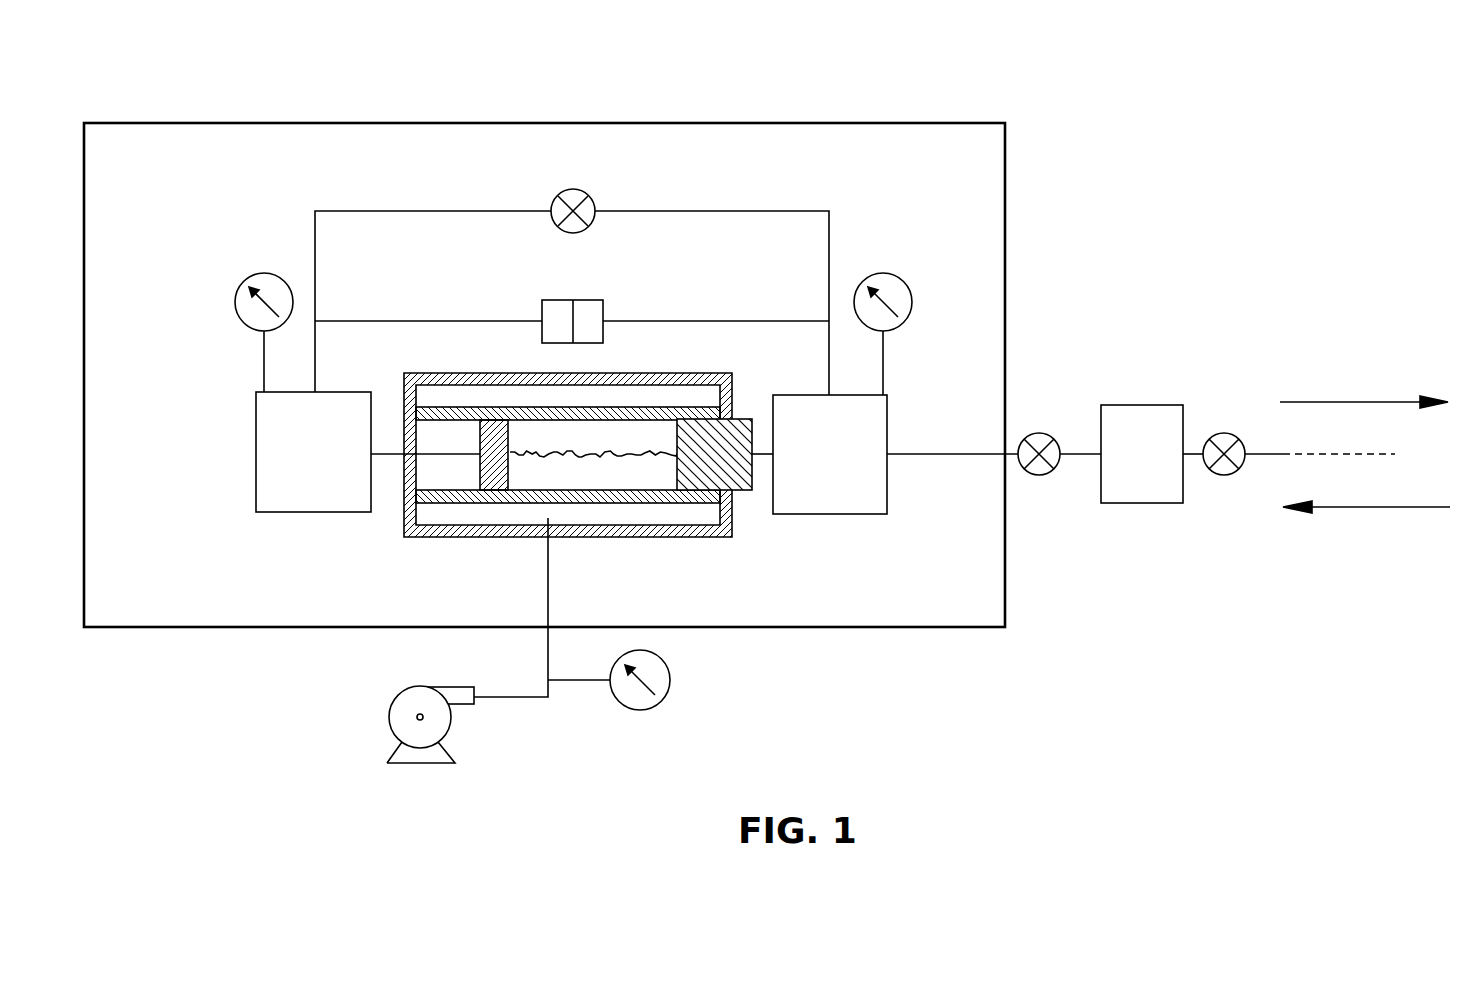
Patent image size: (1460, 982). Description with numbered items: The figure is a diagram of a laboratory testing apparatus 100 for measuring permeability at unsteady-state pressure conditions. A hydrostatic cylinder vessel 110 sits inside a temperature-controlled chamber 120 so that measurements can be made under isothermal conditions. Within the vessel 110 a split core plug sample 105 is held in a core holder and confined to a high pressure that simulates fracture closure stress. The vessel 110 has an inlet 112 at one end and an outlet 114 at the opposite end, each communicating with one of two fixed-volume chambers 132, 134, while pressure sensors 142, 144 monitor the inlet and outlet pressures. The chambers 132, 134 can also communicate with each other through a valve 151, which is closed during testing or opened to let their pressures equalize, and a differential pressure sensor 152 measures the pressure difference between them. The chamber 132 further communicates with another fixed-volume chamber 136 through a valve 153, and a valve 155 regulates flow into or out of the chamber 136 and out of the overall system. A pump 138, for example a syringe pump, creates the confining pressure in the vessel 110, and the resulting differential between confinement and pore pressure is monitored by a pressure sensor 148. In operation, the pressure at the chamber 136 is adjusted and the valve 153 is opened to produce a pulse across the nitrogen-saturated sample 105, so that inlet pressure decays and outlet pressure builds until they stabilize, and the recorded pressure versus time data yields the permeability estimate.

The testing apparatus 100 is at (1133, 103).
The temperature-controlled chamber 120 is at (969, 122).
The valve 151 is at (583, 192).
The differential pressure sensor 152 is at (603, 307).
The pressure sensor 142 is at (897, 277).
The pressure sensor 144 is at (235, 302).
The fixed-volume chamber 132 is at (887, 426).
The fixed-volume chamber 134 is at (256, 471).
The fixed-volume chamber 136 is at (1146, 503).
The valve 153 is at (1039, 433).
The valve 155 is at (1225, 433).
The hydrostatic cylinder vessel 110 is at (693, 537).
The outlet 114 is at (480, 458).
The split core plug sample 105 is at (582, 457).
The inlet 112 is at (752, 460).
The pump 138 is at (452, 728).
The pressure sensor 148 is at (655, 706).